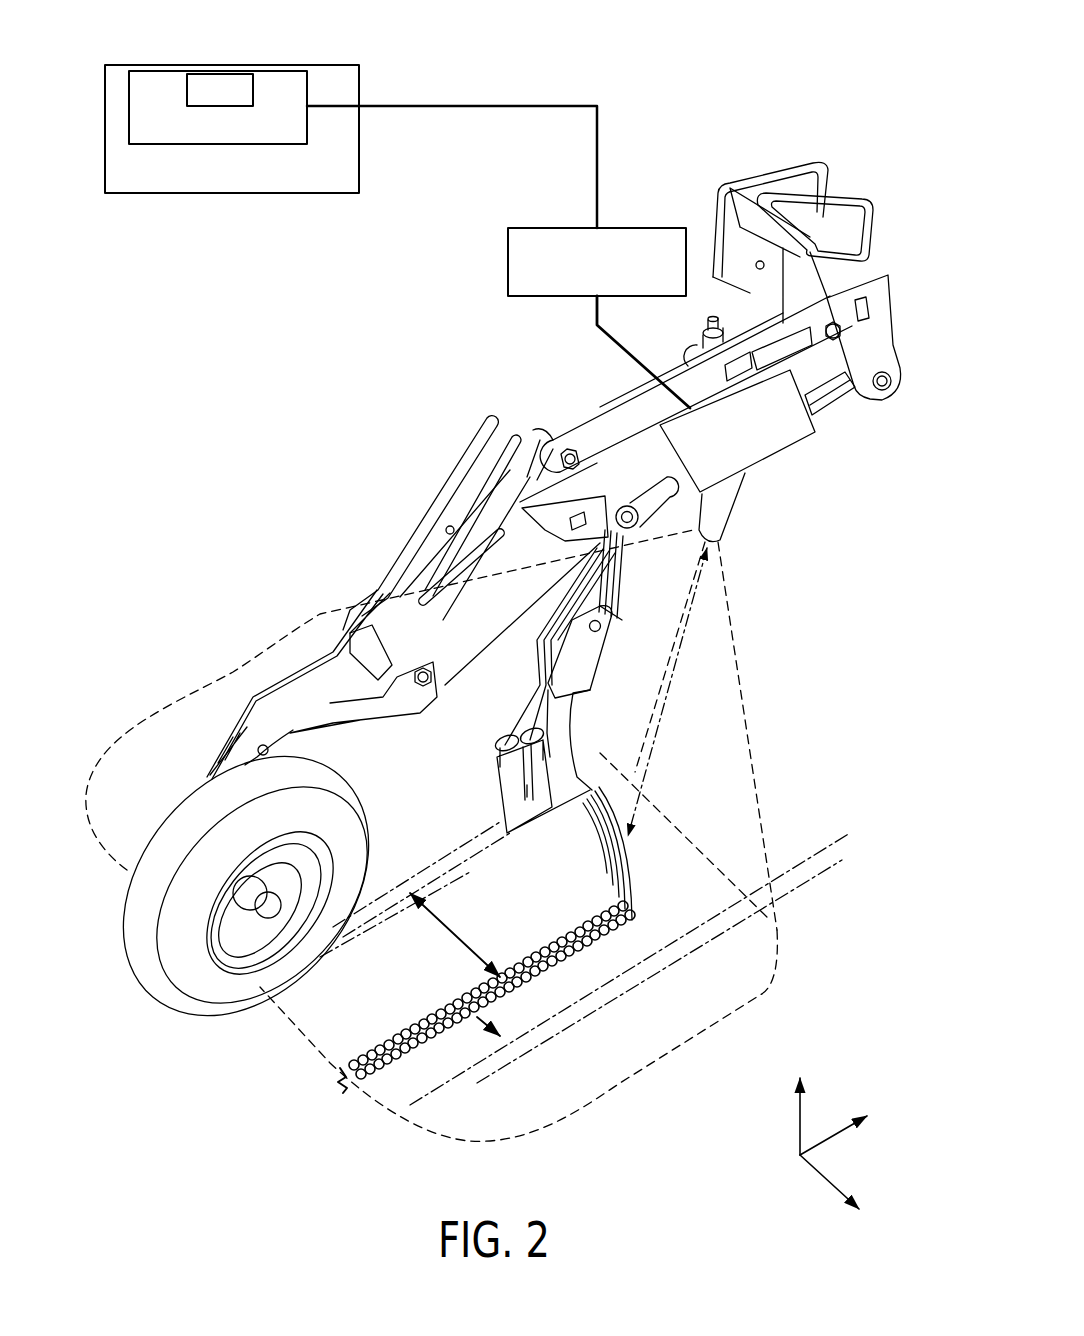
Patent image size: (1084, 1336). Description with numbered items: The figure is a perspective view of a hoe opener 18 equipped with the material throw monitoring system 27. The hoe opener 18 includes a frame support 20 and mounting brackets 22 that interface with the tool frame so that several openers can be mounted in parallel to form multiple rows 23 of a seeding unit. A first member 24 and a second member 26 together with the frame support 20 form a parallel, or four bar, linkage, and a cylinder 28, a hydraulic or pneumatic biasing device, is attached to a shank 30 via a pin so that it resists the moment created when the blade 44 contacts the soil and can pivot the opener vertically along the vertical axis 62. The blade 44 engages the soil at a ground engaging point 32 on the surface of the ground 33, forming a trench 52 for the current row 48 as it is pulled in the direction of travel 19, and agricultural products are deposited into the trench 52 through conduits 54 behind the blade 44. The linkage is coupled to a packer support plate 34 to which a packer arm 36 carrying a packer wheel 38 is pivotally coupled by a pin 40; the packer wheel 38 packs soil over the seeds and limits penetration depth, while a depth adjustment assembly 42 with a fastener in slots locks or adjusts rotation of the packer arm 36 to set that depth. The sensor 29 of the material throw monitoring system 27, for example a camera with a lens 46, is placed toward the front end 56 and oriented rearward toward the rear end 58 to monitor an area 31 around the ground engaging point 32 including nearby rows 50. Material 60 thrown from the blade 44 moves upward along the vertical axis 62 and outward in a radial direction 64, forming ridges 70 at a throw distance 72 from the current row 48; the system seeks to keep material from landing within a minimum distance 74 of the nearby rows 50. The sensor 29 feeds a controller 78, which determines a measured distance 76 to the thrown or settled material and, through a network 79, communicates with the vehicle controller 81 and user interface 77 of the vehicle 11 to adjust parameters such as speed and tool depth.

The vehicle 11 is at (232, 193).
The vehicle controller 81 is at (173, 66).
The user interface 77 is at (218, 74).
The controller 78 is at (553, 228).
The network 79 is at (585, 50).
The hoe opener 18 is at (453, 320).
The direction of travel 19 is at (830, 1140).
The frame support 20 is at (875, 336).
The mounting brackets 22 is at (878, 230).
The rows 23 is at (873, 164).
The first member 24 is at (654, 511).
The second member 26 is at (625, 420).
The material throw monitoring system 27 is at (790, 545).
The cylinder 28 is at (700, 345).
The sensor 29 is at (757, 464).
The shank 30 is at (613, 578).
The area 31 is at (730, 1004).
The ground engaging point 32 is at (574, 828).
The ground 33 is at (793, 740).
The packer support plate 34 is at (525, 435).
The packer arm 36 is at (287, 670).
The packer wheel 38 is at (282, 955).
The pin 40 is at (448, 528).
The depth adjustment assembly 42 is at (400, 447).
The blade 44 is at (598, 767).
The lens 46 is at (735, 508).
The current row 48 is at (462, 858).
The nearby rows 50 is at (806, 887).
The trench 52 is at (471, 872).
The conduits 54 is at (512, 723).
The front end 56 is at (895, 412).
The rear end 58 is at (109, 965).
The material 60 is at (624, 840).
The vertical axis 62 is at (800, 1118).
The radial direction 64 is at (826, 1183).
The ridges 70 is at (331, 1094).
The throw distance 72 is at (452, 940).
The minimum distance 74 is at (532, 1058).
The measured distance 76 is at (687, 620).